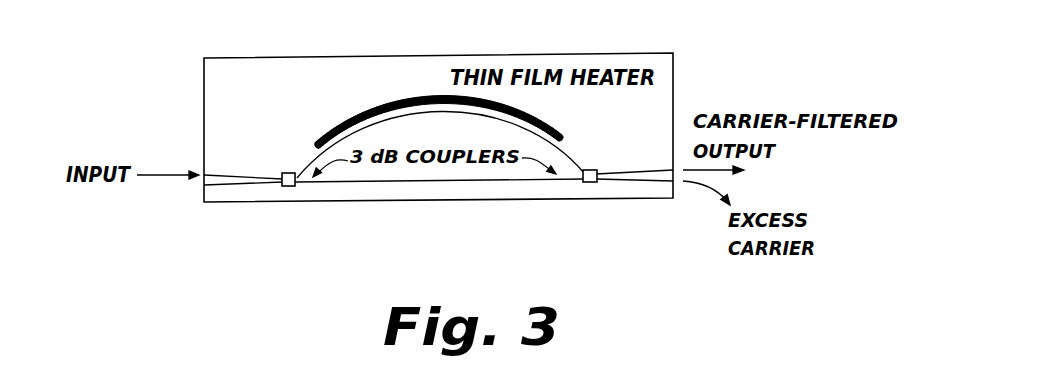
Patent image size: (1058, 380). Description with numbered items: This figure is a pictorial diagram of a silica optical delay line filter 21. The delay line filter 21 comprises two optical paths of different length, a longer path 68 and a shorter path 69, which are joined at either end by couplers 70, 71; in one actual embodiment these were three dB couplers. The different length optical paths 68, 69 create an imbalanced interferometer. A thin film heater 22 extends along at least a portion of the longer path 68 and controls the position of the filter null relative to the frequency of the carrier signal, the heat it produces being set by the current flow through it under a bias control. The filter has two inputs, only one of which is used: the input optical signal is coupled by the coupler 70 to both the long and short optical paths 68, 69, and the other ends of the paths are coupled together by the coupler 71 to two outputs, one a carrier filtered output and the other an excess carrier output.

The delay line filter 21 is at (650, 53).
The thin film heater 22 is at (407, 98).
The longer optical path 68 is at (315, 168).
The shorter optical path 69 is at (446, 187).
The coupler 70 is at (288, 187).
The coupler 71 is at (590, 182).